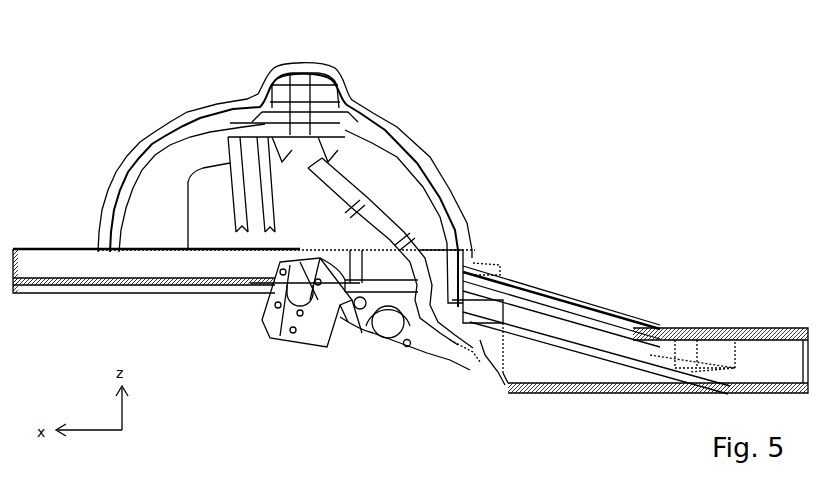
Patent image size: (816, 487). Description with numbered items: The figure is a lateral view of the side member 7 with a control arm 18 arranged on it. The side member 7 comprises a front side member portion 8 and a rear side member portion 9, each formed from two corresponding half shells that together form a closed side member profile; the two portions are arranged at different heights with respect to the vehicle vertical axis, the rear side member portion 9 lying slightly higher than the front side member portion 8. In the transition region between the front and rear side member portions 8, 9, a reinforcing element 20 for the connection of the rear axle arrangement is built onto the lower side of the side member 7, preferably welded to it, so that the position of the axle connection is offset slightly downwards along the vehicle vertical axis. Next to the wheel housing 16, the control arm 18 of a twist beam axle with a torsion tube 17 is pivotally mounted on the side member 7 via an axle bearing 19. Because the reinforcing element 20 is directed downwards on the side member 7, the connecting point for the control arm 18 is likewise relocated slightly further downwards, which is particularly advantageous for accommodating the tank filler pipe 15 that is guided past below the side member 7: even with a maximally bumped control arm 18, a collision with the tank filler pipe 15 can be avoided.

The side member 7 is at (553, 214).
The front side member portion 8 is at (758, 363).
The rear side member portion 9 is at (36, 267).
The tank filler pipe 15 is at (373, 237).
The wheel housing 16 is at (178, 137).
The torsion tube 17 is at (385, 333).
The control arm 18 is at (322, 325).
The axle bearing 19 is at (472, 374).
The reinforcing element 20 is at (488, 355).